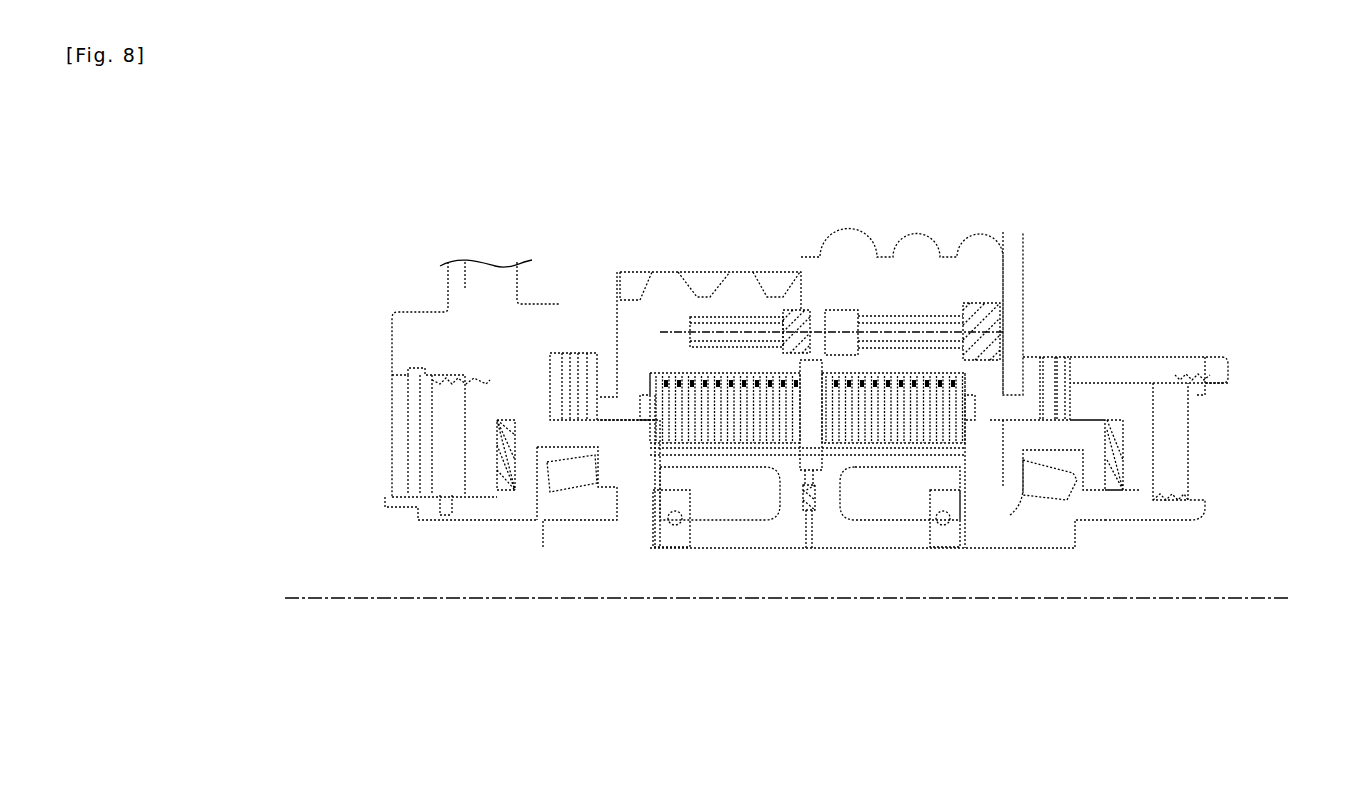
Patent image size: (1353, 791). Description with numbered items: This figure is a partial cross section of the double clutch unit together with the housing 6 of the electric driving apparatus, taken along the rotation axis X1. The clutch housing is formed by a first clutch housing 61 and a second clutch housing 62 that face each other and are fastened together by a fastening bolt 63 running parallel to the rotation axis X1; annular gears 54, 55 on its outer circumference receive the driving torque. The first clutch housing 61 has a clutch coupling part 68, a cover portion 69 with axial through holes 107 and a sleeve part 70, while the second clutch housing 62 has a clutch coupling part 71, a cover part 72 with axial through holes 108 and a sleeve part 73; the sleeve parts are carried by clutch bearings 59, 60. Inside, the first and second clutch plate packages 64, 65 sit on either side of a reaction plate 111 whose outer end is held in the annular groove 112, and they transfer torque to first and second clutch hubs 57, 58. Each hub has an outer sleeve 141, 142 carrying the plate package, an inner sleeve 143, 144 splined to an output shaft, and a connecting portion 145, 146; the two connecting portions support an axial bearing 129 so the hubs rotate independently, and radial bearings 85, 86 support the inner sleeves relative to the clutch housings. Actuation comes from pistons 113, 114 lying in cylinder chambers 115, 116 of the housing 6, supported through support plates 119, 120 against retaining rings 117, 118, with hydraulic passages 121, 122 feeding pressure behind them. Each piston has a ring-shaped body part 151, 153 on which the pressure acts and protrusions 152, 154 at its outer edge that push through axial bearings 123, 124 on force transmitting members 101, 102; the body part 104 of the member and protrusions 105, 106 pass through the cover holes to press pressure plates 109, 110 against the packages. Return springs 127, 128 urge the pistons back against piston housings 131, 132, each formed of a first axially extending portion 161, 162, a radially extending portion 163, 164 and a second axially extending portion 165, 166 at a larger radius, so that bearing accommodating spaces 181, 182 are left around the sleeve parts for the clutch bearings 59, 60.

The housing 6 is at (463, 262).
The annular gear 54 is at (863, 237).
The annular gear 55 is at (758, 288).
The first clutch hub 57 is at (925, 540).
The second clutch hub 58 is at (745, 540).
The clutch bearing 59 is at (1085, 510).
The clutch bearing 60 is at (577, 487).
The first clutch housing 61 is at (915, 290).
The second clutch housing 62 is at (723, 315).
The fastening bolt 63 is at (936, 325).
The first clutch plate package 64 is at (980, 540).
The second clutch plate package 65 is at (723, 540).
The clutch coupling part 68 is at (892, 365).
The cover portion 69 is at (978, 370).
The sleeve part 70 is at (1015, 463).
The clutch coupling part 71 is at (693, 365).
The cover part 72 is at (640, 340).
The sleeve part 73 is at (612, 533).
The radial bearing 85 is at (983, 540).
The radial bearing 86 is at (687, 540).
The force transmitting member 101 is at (1045, 375).
The force transmitting member 102 is at (597, 358).
The body part 104 is at (670, 447).
The protrusion 105 is at (1013, 520).
The protrusion 106 is at (628, 420).
The axial through hole 107 is at (1005, 365).
The axial through hole 108 is at (627, 345).
The pressure plate 109 is at (990, 475).
The pressure plate 110 is at (670, 540).
The reaction plate 111 is at (810, 373).
The annular groove 112 is at (810, 385).
The piston 113 is at (1135, 380).
The piston 114 is at (450, 432).
The cylinder chamber 115 is at (1153, 387).
The cylinder chamber 116 is at (463, 380).
The retaining ring 117 is at (1207, 373).
The retaining ring 118 is at (450, 385).
The support plate 119 is at (1173, 380).
The support plate 120 is at (450, 417).
The hydraulic passage 121 is at (1153, 368).
The hydraulic passage 122 is at (445, 327).
The axial bearing 123 is at (1050, 367).
The axial bearing 124 is at (563, 352).
The return spring 127 is at (1115, 377).
The return spring 128 is at (452, 467).
The axial bearing 129 is at (840, 540).
The piston housing 131 is at (1180, 520).
The piston housing 132 is at (410, 510).
The outer sleeve 141 is at (903, 540).
The outer sleeve 142 is at (772, 540).
The inner sleeve 143 is at (875, 540).
The inner sleeve 144 is at (792, 540).
The connecting portion 145 is at (853, 540).
The connecting portion 146 is at (812, 540).
The body part 151 is at (1137, 433).
The protrusion 152 is at (450, 457).
The body part 153 is at (1097, 380).
The protrusion 154 is at (523, 352).
The first axially extending portion 161 is at (1150, 510).
The first axially extending portion 162 is at (522, 482).
The radially extending portion 163 is at (1093, 483).
The radially extending portion 164 is at (447, 513).
The second axially extending portion 165 is at (1058, 435).
The second axially extending portion 166 is at (568, 440).
The bearing accommodating space 181 is at (1058, 482).
The bearing accommodating space 182 is at (600, 465).
The rotation axis X1 is at (1268, 600).